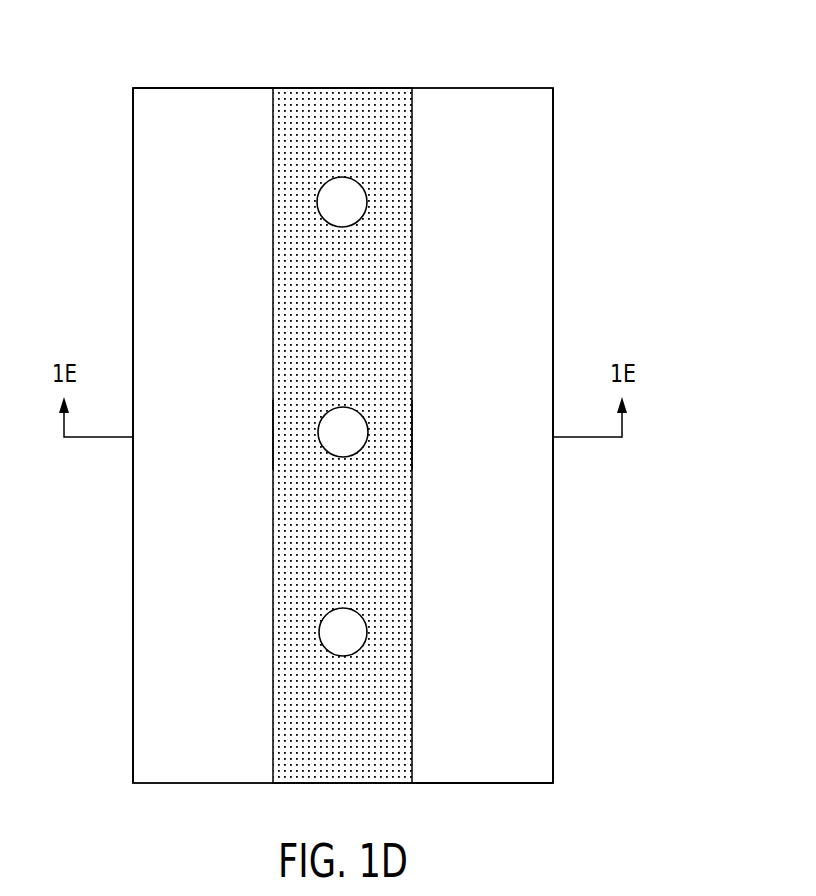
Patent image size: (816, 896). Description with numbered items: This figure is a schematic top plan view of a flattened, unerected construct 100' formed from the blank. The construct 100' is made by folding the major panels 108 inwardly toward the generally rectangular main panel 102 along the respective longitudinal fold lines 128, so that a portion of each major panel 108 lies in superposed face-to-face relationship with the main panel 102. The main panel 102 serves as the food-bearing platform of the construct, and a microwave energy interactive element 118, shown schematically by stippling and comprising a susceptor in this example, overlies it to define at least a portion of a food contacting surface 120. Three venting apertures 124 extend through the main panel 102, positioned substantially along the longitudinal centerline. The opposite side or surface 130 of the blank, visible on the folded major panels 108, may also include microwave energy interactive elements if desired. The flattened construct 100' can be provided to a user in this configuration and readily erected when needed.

The flattened construct 100' is at (426, 409).
The main panel 102 is at (302, 88).
The major panel 108 is at (153, 282).
The microwave energy interactive element 118 is at (374, 125).
The food contacting surface 120 is at (354, 364).
The venting apertures 124 is at (367, 200).
The fold lines 128 is at (133, 598).
The opposite side 130 is at (216, 161).